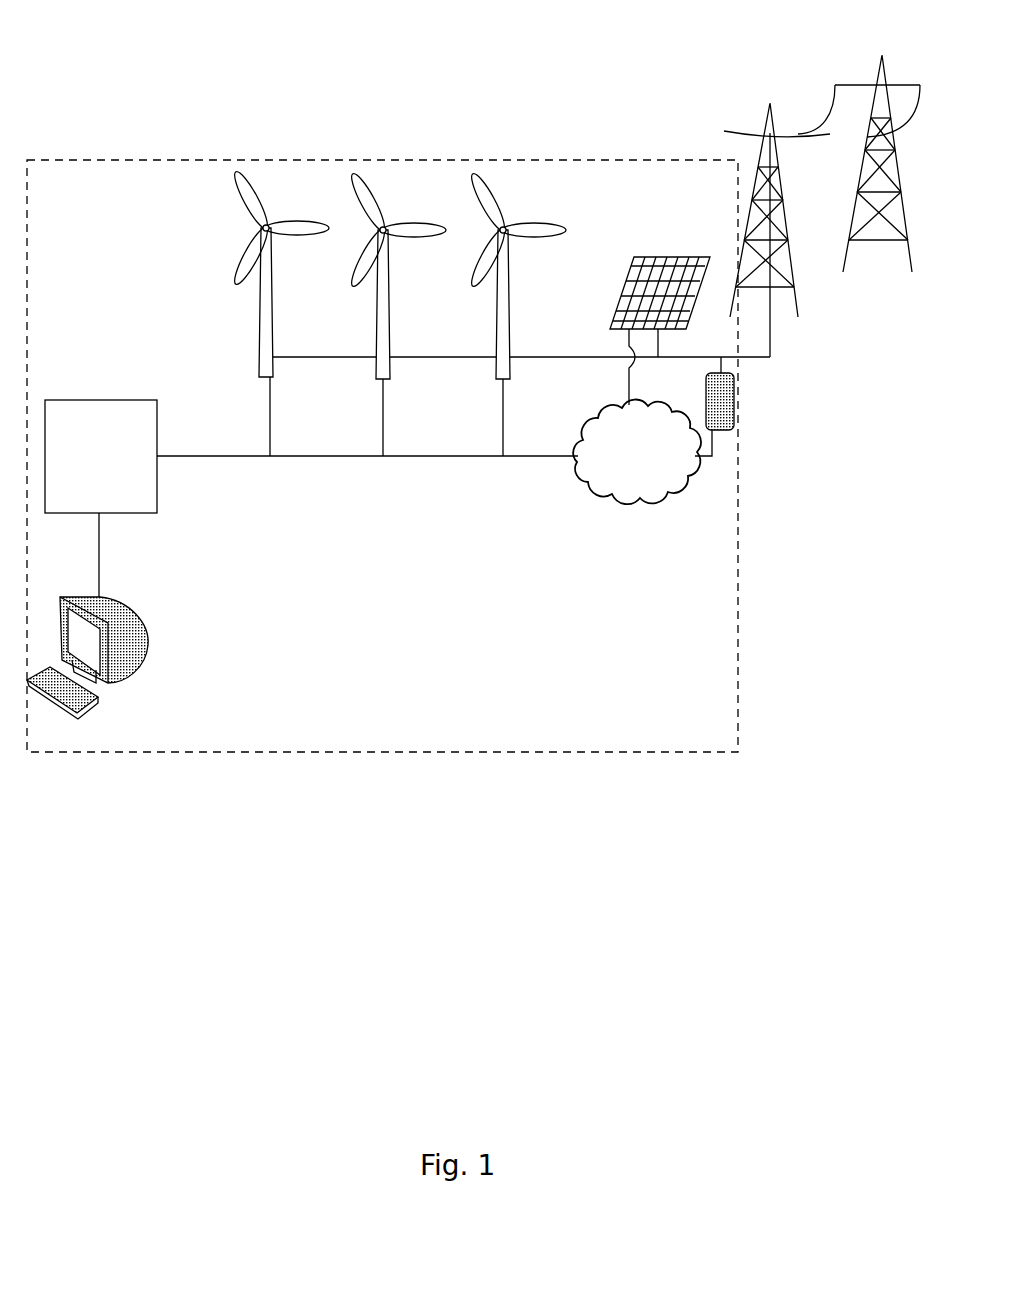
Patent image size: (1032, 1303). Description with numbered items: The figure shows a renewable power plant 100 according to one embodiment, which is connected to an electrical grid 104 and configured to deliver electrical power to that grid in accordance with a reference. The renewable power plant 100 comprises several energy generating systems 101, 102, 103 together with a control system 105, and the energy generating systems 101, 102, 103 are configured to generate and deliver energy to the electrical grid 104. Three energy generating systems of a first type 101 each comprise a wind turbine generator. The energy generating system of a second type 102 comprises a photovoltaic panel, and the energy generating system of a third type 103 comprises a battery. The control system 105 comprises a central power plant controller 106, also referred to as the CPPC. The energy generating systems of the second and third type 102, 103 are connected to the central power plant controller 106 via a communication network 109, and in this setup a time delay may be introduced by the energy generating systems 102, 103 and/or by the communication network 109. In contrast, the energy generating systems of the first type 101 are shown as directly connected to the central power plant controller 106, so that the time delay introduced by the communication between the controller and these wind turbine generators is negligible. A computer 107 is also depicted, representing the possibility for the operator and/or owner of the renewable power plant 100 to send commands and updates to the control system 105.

The renewable power plant 100 is at (172, 158).
The energy generating systems of a first type 101 is at (465, 185).
The energy generating system of a second type 102 is at (650, 265).
The energy generating system of a third type 103 is at (726, 407).
The electrical grid 104 is at (813, 105).
The control system 105 is at (183, 588).
The central power plant controller 106 is at (150, 487).
The computer 107 is at (125, 637).
The communication network 109 is at (640, 487).